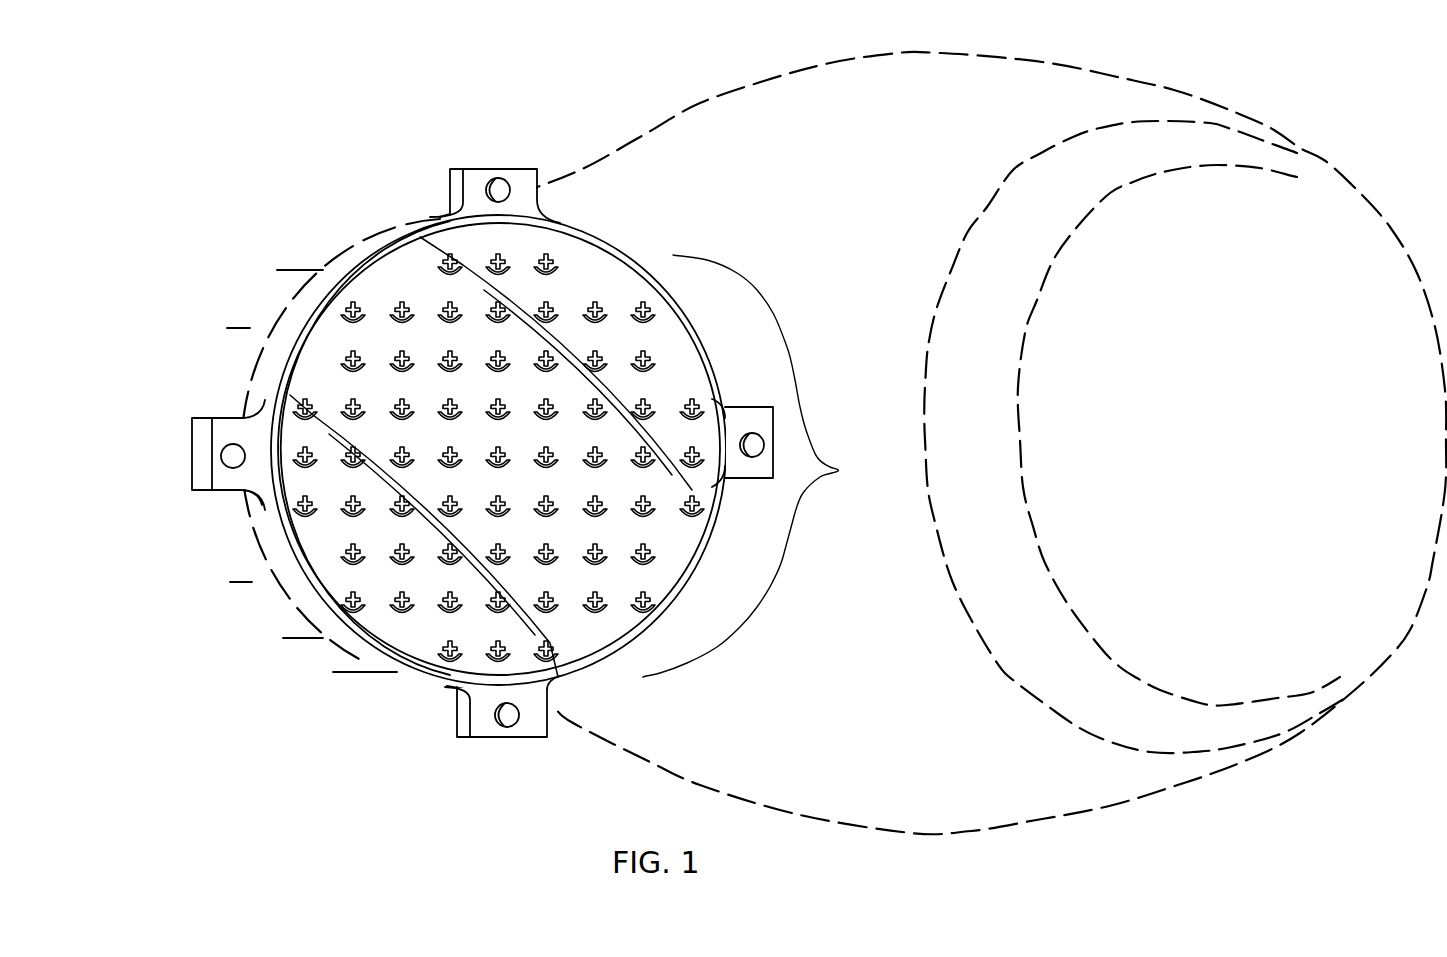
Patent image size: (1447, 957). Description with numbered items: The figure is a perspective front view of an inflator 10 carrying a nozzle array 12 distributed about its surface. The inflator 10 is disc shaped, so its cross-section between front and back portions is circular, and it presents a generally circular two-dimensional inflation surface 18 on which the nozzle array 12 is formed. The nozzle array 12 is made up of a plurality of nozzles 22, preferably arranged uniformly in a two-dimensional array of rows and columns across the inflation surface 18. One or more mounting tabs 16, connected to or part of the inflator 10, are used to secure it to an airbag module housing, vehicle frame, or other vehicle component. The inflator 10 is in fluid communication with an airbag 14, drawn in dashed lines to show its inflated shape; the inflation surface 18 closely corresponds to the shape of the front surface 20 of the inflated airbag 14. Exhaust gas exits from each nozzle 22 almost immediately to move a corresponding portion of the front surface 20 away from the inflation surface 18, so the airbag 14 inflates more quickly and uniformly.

The inflator 10 is at (332, 695).
The nozzle array 12 is at (838, 471).
The airbag 14 is at (655, 762).
The mounting tab 16 is at (477, 172).
The inflation surface 18 is at (426, 622).
The front surface 20 is at (1255, 445).
The nozzle 22 is at (648, 560).